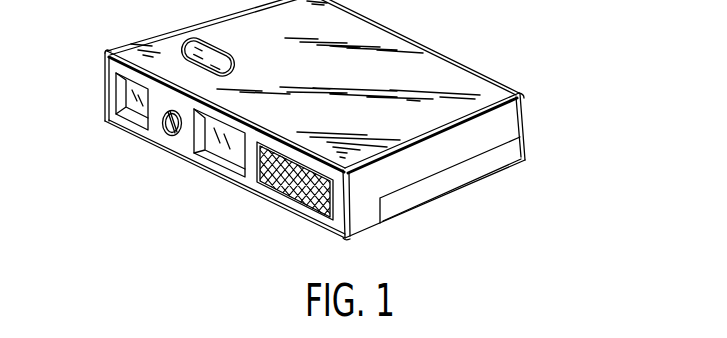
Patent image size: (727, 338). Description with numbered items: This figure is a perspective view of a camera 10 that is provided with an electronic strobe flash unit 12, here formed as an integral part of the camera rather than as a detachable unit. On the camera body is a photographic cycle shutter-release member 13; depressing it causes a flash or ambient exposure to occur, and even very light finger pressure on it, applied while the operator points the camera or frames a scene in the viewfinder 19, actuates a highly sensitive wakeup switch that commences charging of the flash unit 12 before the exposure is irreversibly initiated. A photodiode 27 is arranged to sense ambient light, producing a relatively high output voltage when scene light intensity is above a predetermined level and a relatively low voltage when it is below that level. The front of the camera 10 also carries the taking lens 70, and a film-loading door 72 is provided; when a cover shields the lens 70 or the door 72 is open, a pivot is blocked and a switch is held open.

The camera 10 is at (116, 34).
The electronic strobe flash unit 12 is at (290, 191).
The photographic cycle shutter-release member 13 is at (210, 48).
The viewfinder 19 is at (124, 100).
The photodiode 27 is at (166, 136).
The taking lens 70 is at (222, 148).
The film-loading door 72 is at (438, 188).